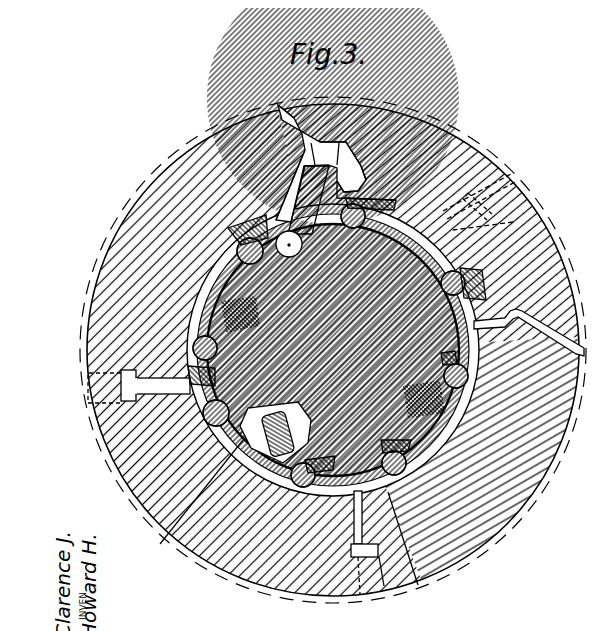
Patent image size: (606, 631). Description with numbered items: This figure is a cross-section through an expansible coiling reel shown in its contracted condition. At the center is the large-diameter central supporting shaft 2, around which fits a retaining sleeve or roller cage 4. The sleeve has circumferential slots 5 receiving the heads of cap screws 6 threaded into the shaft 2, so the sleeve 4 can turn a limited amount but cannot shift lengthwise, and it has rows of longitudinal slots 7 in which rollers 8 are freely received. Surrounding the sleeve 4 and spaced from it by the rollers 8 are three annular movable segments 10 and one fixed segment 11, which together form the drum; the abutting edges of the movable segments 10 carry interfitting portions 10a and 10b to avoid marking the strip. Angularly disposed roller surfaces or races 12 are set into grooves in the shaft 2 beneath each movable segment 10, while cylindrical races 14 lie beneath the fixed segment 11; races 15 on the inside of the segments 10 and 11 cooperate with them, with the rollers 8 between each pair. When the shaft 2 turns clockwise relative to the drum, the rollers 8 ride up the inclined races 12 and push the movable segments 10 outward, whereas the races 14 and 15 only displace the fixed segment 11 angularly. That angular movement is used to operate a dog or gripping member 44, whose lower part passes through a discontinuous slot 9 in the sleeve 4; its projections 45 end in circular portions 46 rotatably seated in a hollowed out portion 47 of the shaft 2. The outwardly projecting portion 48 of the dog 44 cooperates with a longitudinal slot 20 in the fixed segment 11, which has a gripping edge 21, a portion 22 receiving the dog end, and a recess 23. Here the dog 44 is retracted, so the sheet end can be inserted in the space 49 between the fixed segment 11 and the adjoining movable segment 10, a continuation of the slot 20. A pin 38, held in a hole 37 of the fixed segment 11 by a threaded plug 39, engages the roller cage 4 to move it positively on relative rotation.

The central supporting shaft 2 is at (333, 350).
The retaining sleeve or roller cage 4 is at (195, 507).
The circumferential slots 5 is at (233, 440).
The cap screws 6 is at (257, 450).
The longitudinal slots 7 is at (385, 475).
The rollers 8 is at (430, 142).
The discontinuous longitudinal slot 9 is at (268, 208).
The annular movable segments 10 is at (110, 241).
The interfitting portion 10a is at (92, 398).
The interfitting portion 10b is at (82, 384).
The fixed segment 11 is at (508, 207).
The angularly disposed roller surfaces or races 12 is at (212, 358).
The roller surfaces or races 14 is at (413, 266).
The roller surfaces or races 15 is at (230, 218).
The longitudinal slot 20 is at (362, 160).
The gripping edge 21 is at (323, 130).
The portion 22 is at (337, 134).
The recess 23 is at (413, 134).
The hole 37 is at (505, 214).
The pin 38 is at (443, 244).
The threaded plug 39 is at (500, 168).
The dog or gripping member 44 is at (262, 165).
The projections 45 is at (297, 222).
The circular portions 46 is at (288, 248).
The hollowed out portion 47 is at (277, 258).
The outwardly projecting portion 48 is at (321, 163).
The space 49 is at (270, 113).